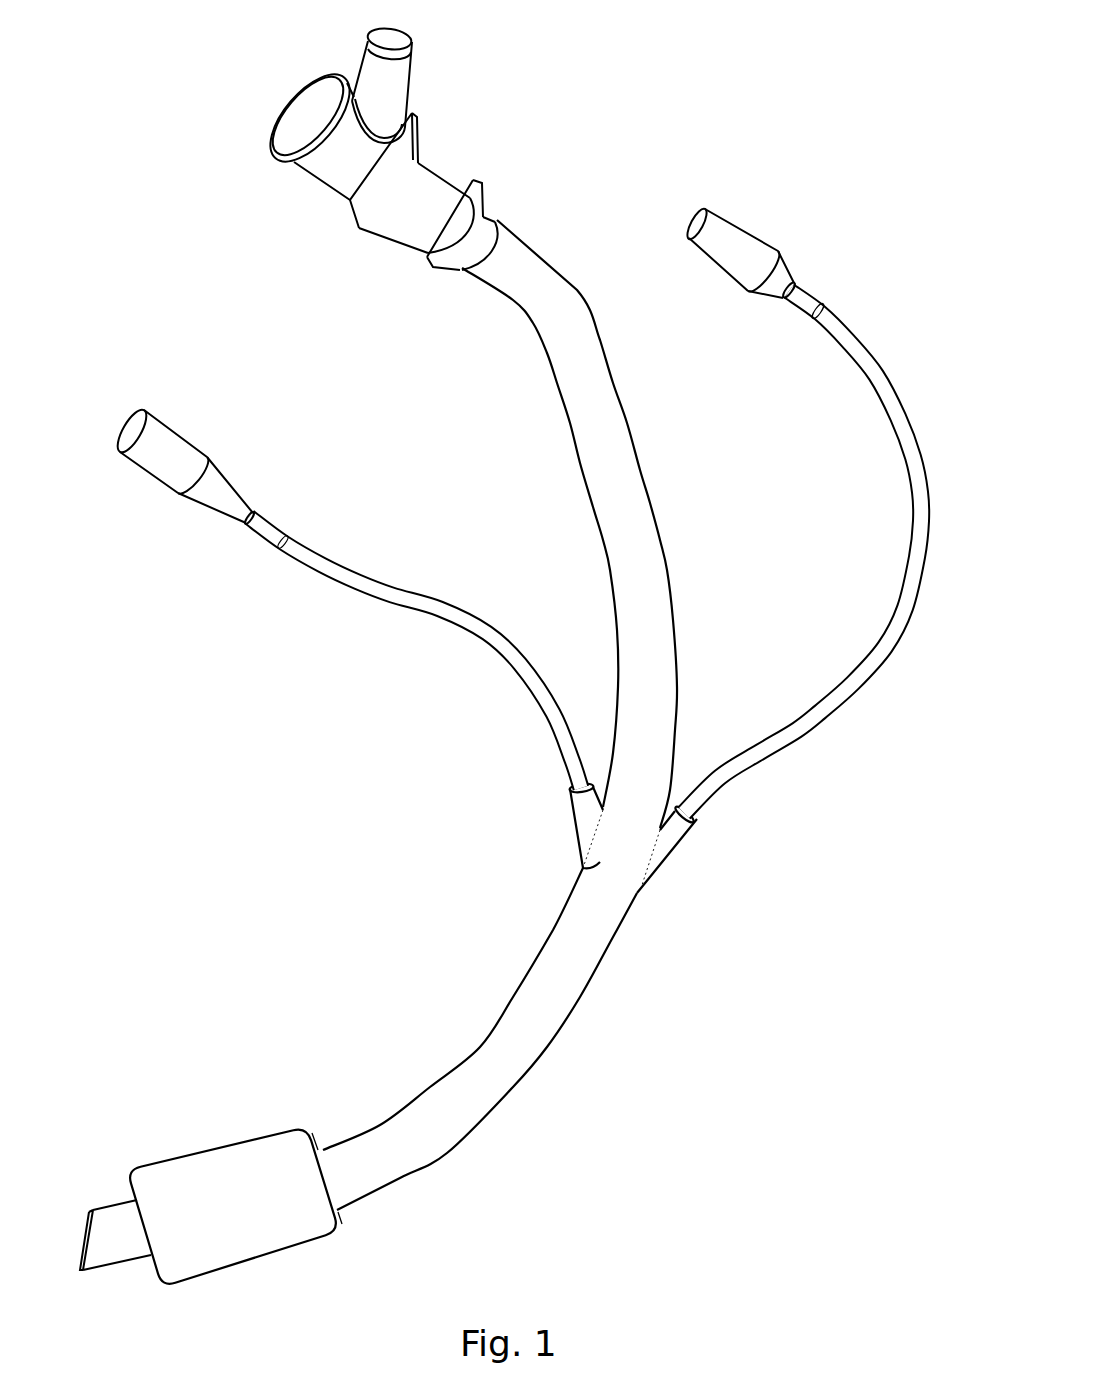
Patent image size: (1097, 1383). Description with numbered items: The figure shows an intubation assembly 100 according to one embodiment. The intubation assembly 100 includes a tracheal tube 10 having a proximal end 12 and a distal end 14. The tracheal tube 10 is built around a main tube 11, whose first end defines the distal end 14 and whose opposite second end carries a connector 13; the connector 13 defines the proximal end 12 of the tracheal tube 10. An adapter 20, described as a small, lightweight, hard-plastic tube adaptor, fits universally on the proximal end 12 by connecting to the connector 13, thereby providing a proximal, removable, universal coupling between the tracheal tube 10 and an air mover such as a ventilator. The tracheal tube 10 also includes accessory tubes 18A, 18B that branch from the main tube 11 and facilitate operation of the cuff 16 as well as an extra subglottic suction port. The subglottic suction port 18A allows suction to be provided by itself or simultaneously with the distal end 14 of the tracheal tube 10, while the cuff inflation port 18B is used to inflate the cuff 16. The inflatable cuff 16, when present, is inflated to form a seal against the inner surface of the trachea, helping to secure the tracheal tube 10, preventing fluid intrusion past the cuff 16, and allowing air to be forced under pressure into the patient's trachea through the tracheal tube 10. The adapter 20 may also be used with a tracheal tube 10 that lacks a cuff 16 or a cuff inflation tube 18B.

The intubation assembly 100 is at (497, 642).
The tracheal tube 10 is at (516, 694).
The main tube 11 is at (618, 630).
The proximal end 12 is at (455, 178).
The connector 13 is at (333, 221).
The distal end 14 is at (87, 1237).
The cuff 16 is at (230, 1143).
The subglottic suction port 18A is at (737, 230).
The cuff inflation port 18B is at (188, 441).
The adapter 20 is at (357, 170).